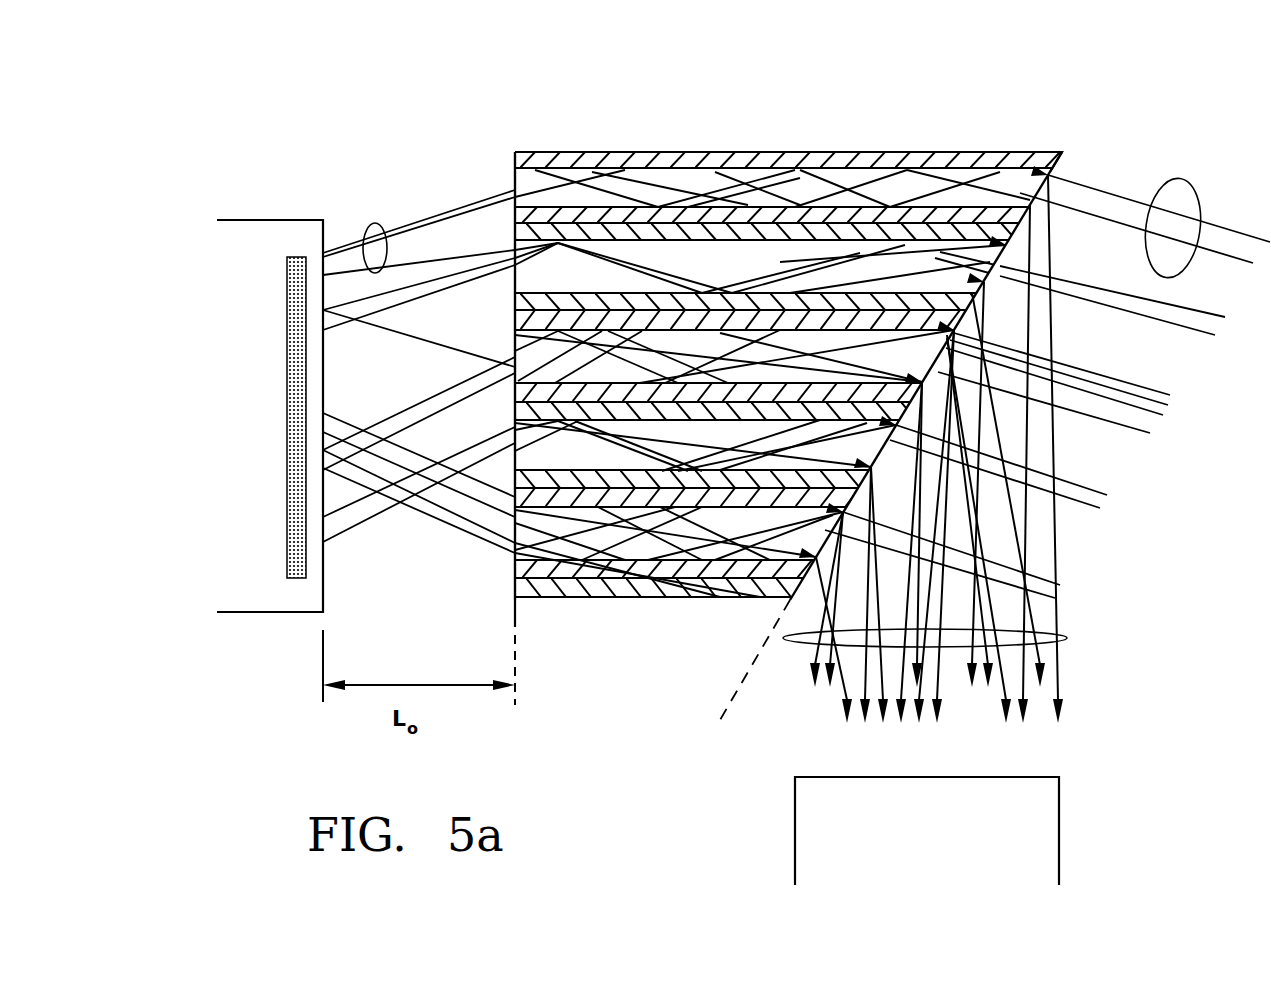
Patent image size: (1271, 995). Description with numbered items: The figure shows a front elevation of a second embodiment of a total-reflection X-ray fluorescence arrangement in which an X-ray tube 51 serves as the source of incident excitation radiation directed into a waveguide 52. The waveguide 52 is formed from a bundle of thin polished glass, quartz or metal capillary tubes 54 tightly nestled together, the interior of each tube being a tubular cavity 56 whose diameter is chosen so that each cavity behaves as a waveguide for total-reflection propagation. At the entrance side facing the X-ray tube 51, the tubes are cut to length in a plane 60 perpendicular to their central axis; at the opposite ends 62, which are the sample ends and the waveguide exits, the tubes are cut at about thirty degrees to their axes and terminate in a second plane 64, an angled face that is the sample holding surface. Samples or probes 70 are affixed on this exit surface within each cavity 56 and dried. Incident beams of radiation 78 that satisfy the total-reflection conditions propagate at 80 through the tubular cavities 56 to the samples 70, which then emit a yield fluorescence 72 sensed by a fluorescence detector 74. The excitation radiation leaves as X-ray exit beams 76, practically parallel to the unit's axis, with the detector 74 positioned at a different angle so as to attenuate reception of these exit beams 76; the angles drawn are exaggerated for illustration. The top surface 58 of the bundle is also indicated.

The X-ray tube 51 is at (263, 205).
The waveguide 52 is at (541, 96).
The capillary tubes 54 is at (708, 601).
The tubular cavity 56 is at (690, 255).
The top surface 58 is at (515, 162).
The plane 60 is at (515, 702).
The opposite ends 62 is at (1057, 165).
The second plane 64 is at (722, 718).
The samples or probes 70 is at (976, 292).
The yield fluorescence 72 is at (1068, 638).
The fluorescence detector 74 is at (1072, 809).
The X-ray exit beams 76 is at (1190, 182).
The incident beams of radiation 78 is at (372, 224).
The propagation within the waveguide 80 is at (553, 187).